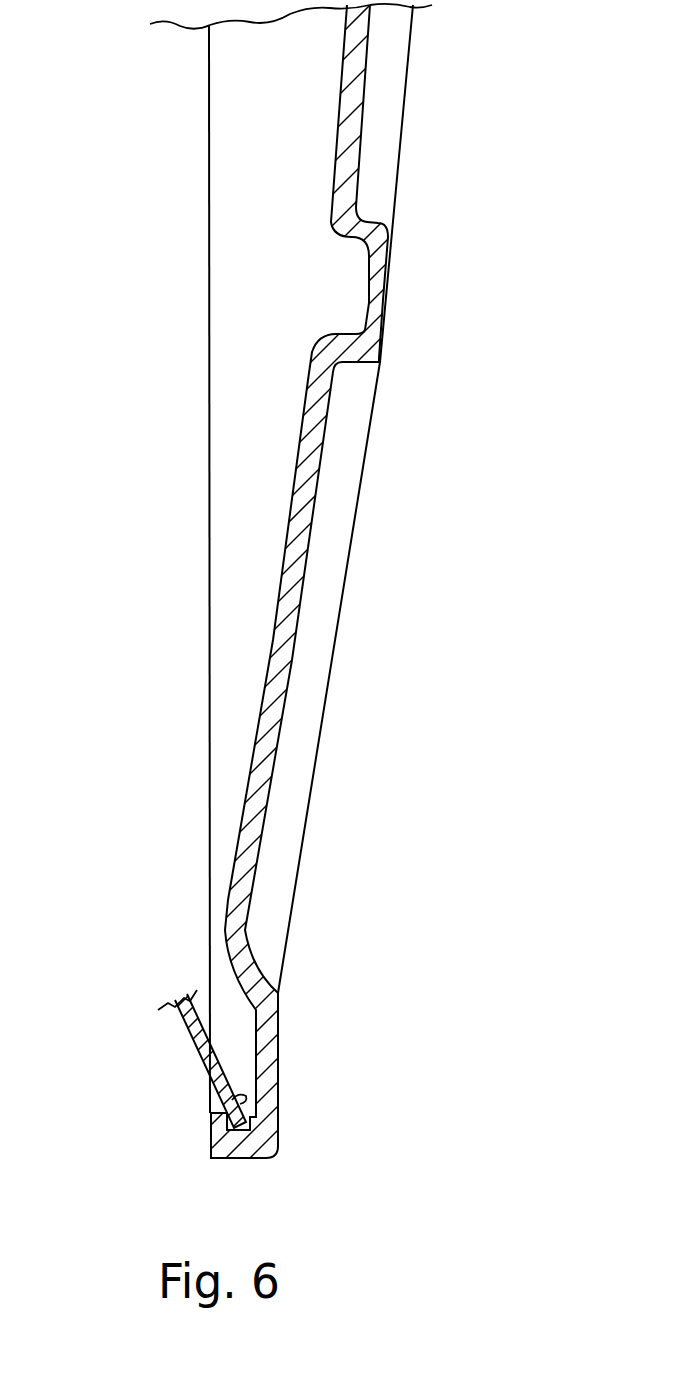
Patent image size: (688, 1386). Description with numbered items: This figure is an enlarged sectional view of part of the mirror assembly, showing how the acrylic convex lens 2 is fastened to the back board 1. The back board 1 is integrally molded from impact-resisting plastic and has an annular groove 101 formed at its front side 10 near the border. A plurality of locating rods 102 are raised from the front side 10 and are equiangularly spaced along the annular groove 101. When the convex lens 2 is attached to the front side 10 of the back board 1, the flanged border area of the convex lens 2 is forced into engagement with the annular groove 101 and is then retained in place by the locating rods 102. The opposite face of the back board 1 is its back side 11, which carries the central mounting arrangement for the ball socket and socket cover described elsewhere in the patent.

The back board 1 is at (381, 488).
The front side 10 is at (209, 150).
The back side 11 is at (403, 125).
The acrylic convex lens 2 is at (168, 1058).
The annular groove 101 is at (250, 1133).
The locating rods 102 is at (240, 1100).